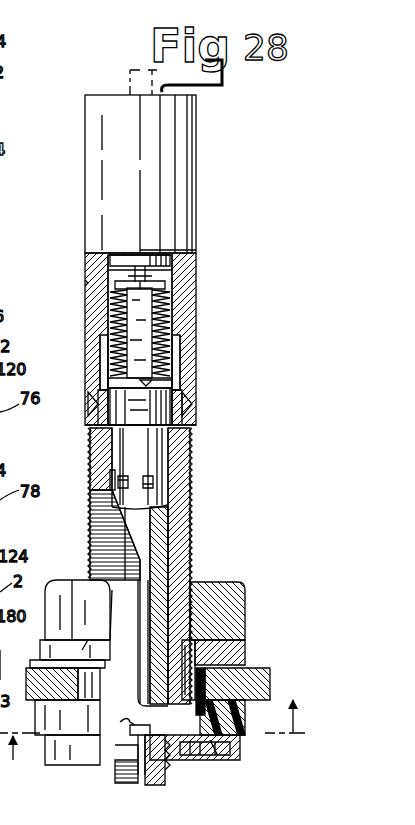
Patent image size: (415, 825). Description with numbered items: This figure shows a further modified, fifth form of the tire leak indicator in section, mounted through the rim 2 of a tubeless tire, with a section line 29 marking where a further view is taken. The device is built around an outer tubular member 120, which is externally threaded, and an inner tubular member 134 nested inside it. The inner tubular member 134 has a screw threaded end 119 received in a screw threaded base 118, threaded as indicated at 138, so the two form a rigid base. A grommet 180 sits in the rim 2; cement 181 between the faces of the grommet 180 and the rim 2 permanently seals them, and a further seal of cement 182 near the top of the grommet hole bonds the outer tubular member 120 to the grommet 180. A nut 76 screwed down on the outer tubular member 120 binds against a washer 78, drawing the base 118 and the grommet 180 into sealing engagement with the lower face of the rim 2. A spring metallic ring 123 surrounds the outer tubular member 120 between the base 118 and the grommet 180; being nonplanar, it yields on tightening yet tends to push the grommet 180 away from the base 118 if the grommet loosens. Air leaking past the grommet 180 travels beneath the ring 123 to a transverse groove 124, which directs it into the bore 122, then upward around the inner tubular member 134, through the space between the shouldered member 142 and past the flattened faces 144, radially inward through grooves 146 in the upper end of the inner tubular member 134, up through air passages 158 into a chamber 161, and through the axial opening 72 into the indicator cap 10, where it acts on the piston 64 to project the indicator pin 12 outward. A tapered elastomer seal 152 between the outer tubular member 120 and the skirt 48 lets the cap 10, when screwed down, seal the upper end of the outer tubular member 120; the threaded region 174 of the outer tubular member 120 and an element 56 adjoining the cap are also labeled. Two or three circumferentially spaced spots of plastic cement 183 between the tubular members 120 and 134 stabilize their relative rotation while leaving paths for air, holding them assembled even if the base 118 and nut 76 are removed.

The rim 2 is at (250, 677).
The indicator cap 10 is at (200, 158).
The indicator pin 12 is at (126, 82).
The section line 29- 29 is at (154, 744).
The skirt 48 is at (195, 348).
The seal 56 is at (88, 284).
The piston 64 is at (190, 258).
The axial opening 72 is at (195, 277).
The nut 76 is at (225, 582).
The washer 78 is at (245, 637).
The screw threaded base 118 is at (237, 758).
The screw threaded end 119 is at (140, 785).
The outer tubular member 120 is at (184, 452).
The bore 122 is at (170, 500).
The spring metallic ring 123 is at (215, 763).
The transverse groove 124 is at (135, 726).
The inner tubular member 134 is at (170, 480).
The screw threads 138 is at (165, 772).
The shouldered member 142 is at (88, 397).
The flattened faces 144 is at (185, 400).
The grooves 146 is at (192, 382).
The tapered elastomer seal 152 is at (192, 412).
The air passages 158 is at (190, 318).
The chamber 161 is at (178, 290).
The external thread 174 is at (195, 527).
The grommet 180 is at (140, 732).
The cement 181 is at (238, 692).
The seal of cement 182 is at (228, 668).
The spots of plastic cement 183 is at (110, 476).